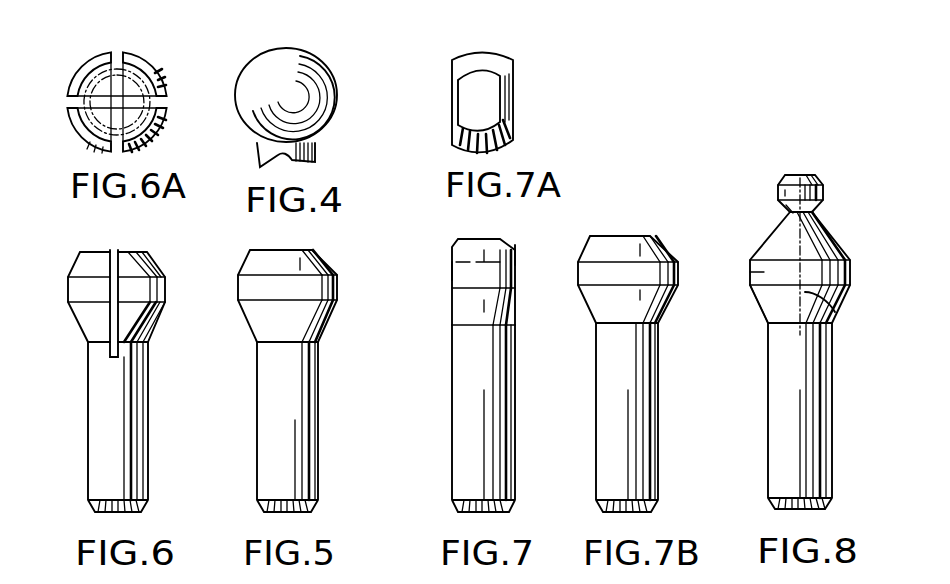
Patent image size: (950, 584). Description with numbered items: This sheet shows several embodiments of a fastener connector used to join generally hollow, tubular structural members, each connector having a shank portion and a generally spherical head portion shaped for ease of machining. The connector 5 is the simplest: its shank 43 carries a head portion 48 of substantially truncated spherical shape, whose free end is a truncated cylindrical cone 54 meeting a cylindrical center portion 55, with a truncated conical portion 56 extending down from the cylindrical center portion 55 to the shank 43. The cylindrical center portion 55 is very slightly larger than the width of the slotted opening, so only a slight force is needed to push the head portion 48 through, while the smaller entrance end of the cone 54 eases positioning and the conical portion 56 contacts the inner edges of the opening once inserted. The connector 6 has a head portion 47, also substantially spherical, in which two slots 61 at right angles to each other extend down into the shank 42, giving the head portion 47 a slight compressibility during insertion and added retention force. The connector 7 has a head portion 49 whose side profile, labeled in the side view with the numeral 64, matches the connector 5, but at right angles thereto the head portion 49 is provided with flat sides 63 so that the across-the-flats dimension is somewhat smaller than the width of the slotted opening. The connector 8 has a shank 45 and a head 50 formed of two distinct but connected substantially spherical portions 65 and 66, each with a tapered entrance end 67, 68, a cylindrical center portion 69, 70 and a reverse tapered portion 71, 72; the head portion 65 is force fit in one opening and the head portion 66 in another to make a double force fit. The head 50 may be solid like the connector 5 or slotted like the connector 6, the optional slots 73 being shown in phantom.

In FIG. 5, the connector 5 is at (290, 369).
In FIG. 6, the connector 6 is at (105, 364).
In FIG. 7, the connector 7 is at (471, 365).
In FIG. 8, the connector 8 is at (806, 318).
In FIG. 6, the shank 42 is at (87, 450).
In FIG. 5, the shank 43 is at (258, 460).
In FIG. 8, the shank 45 is at (768, 448).
In FIG. 6, the head portion 47 is at (60, 307).
In FIG. 5, the head portion 48 is at (290, 295).
In FIG. 7, the head portion 49 is at (442, 320).
In FIG. 8, the head 50 is at (752, 319).
In FIG. 5, the truncated cylindrical cone 54 is at (330, 262).
In FIG. 5, the cylindrical center portion 55 is at (338, 288).
In FIG. 5, the truncated conical portion 56 is at (328, 312).
In FIG. 6A, the slots 61 is at (160, 100).
In FIG. 6, the slots 61 is at (120, 272).
In FIG. 7A, the flat sides 63 is at (452, 102).
In FIG. 7, the flat sides 63 is at (452, 280).
In FIG. 7B, the head 64 is at (668, 306).
In FIG. 8, the head portion 65 is at (802, 170).
In FIG. 8, the head portion 66 is at (808, 274).
In FIG. 8, the tapered entrance end 67 is at (820, 182).
In FIG. 8, the tapered entrance end 68 is at (845, 246).
In FIG. 8, the cylindrical center portion 69 is at (778, 190).
In FIG. 8, the cylindrical center portion 70 is at (750, 272).
In FIG. 8, the reverse tapered portion 71 is at (782, 213).
In FIG. 8, the reverse tapered portion 72 is at (845, 305).
In FIG. 8, the slots 73 is at (836, 312).